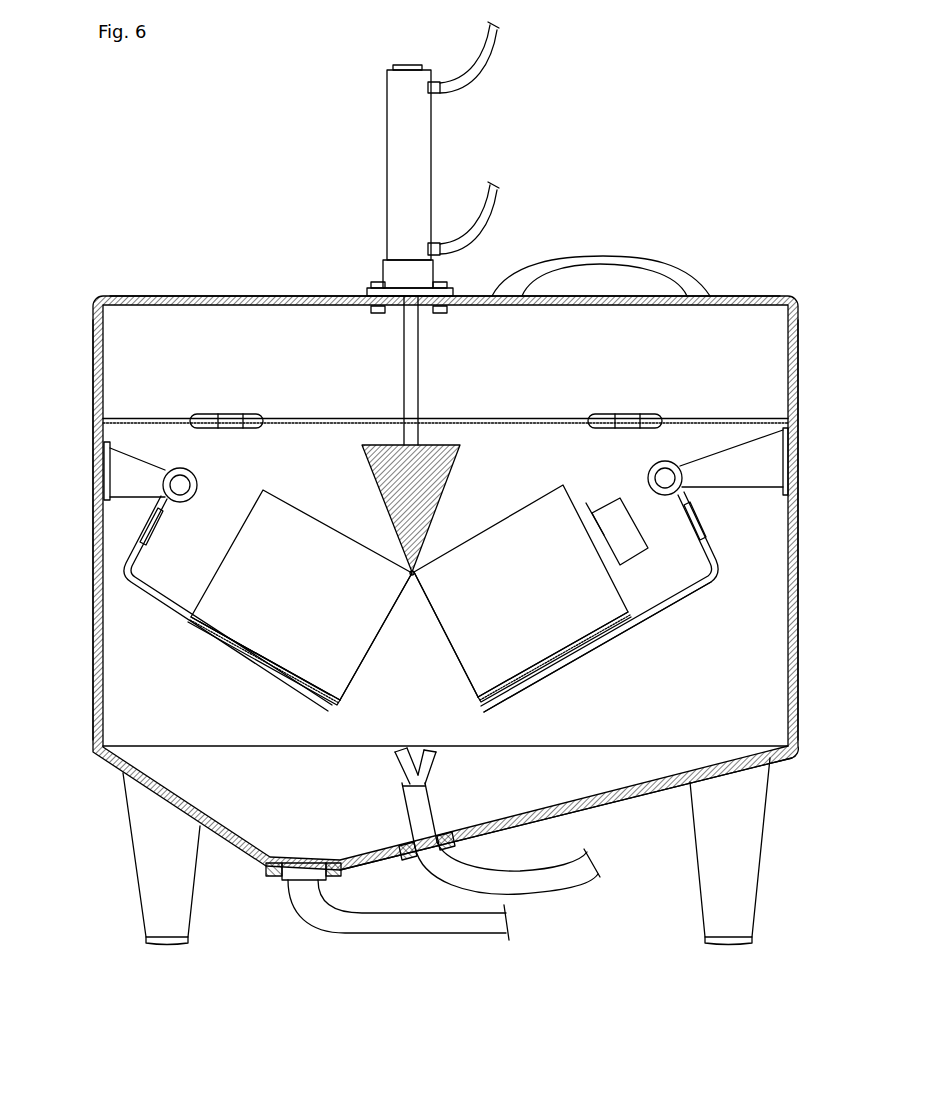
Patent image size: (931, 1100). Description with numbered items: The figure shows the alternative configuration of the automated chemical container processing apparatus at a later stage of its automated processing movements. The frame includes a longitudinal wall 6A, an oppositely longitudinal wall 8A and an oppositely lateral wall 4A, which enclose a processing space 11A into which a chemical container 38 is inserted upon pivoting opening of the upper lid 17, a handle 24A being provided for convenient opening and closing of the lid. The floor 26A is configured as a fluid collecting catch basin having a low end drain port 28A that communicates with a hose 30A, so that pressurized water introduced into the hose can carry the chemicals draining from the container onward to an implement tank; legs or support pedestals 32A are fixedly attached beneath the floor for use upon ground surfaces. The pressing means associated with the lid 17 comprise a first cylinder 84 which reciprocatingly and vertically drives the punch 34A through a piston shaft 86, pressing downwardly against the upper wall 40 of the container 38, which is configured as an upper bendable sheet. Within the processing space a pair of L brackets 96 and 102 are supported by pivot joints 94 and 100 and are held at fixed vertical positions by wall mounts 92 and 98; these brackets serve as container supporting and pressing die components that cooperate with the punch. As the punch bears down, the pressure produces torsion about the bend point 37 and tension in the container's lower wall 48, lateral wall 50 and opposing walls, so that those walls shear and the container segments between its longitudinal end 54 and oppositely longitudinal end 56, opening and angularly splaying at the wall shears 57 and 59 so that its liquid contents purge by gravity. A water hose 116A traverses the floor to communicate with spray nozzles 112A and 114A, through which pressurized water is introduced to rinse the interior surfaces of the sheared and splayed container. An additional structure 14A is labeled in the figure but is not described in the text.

The oppositely lateral wall 4A is at (152, 710).
The longitudinal wall 6A is at (93, 590).
The oppositely longitudinal wall 8A is at (797, 640).
The processing space 11A is at (722, 619).
The partition 14A is at (632, 419).
The upper lid 17 is at (232, 296).
The handle 24A is at (612, 258).
The floor 26A is at (620, 800).
The low end drain port 28A is at (258, 858).
The hose 30A is at (395, 927).
The legs or support pedestals 32A is at (152, 877).
The punch 34A is at (380, 495).
The bend point 37 is at (412, 578).
The chemical container 38 is at (411, 590).
The upper wall 40 is at (411, 592).
The lower wall 48 is at (333, 697).
The lateral wall 50 is at (507, 627).
The longitudinal end 54 is at (227, 598).
The oppositely longitudinal end 56 is at (592, 595).
The wall shear 57 is at (378, 632).
The wall shear 59 is at (448, 637).
The first cylinder 84 is at (400, 172).
The piston shaft 86 is at (420, 372).
The wall mount 92 is at (127, 480).
The pivot joint 94 is at (186, 470).
The L bracket 96 is at (173, 610).
The wall mount 98 is at (758, 485).
The pivot joint 100 is at (684, 483).
The L bracket 102 is at (650, 610).
The spray nozzle 112A is at (395, 765).
The spray nozzle 114A is at (440, 765).
The water hose 116A is at (550, 885).